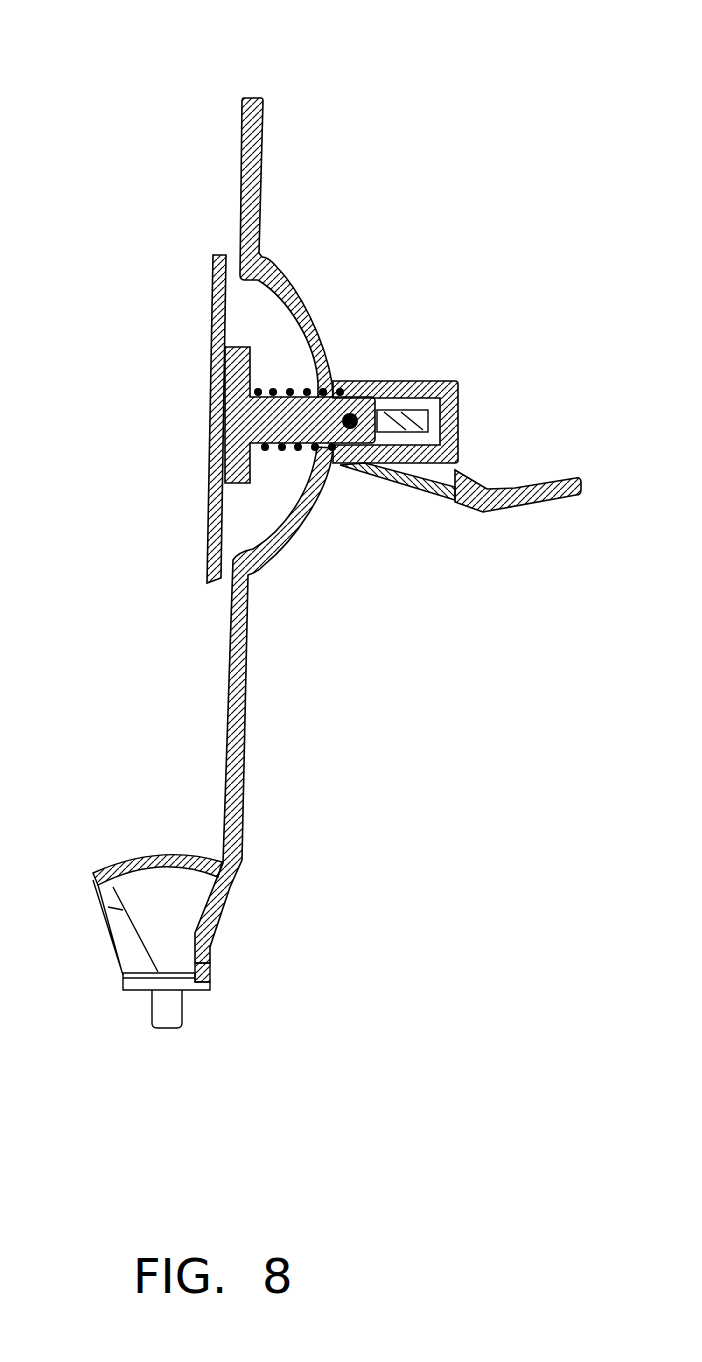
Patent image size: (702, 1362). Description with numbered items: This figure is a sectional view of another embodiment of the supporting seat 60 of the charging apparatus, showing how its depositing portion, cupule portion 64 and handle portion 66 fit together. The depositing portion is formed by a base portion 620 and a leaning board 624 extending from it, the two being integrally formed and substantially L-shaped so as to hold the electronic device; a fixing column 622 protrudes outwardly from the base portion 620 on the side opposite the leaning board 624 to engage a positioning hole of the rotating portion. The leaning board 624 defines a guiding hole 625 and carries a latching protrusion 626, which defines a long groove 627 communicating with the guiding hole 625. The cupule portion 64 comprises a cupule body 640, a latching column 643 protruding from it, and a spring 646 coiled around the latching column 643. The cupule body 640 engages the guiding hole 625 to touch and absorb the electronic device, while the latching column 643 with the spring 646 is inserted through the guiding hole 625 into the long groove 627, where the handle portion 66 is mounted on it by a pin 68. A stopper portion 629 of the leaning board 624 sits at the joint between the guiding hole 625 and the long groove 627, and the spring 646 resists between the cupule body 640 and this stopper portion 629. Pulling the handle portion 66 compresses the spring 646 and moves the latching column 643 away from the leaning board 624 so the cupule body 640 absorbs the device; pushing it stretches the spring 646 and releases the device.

The supporting seat 60 is at (260, 35).
The leaning board 624 is at (250, 200).
The guiding hole 625 is at (257, 307).
The latching protrusion 626 is at (403, 386).
The long groove 627 is at (420, 420).
The stopper portion 629 is at (343, 391).
The handle portion 66 is at (504, 490).
The pin 68 is at (358, 427).
The spring 646 is at (340, 463).
The latching column 643 is at (290, 425).
The cupule body 640 is at (220, 495).
The cupule portion 64 is at (426, 563).
The base portion 620 is at (155, 867).
The fixing column 622 is at (170, 1010).